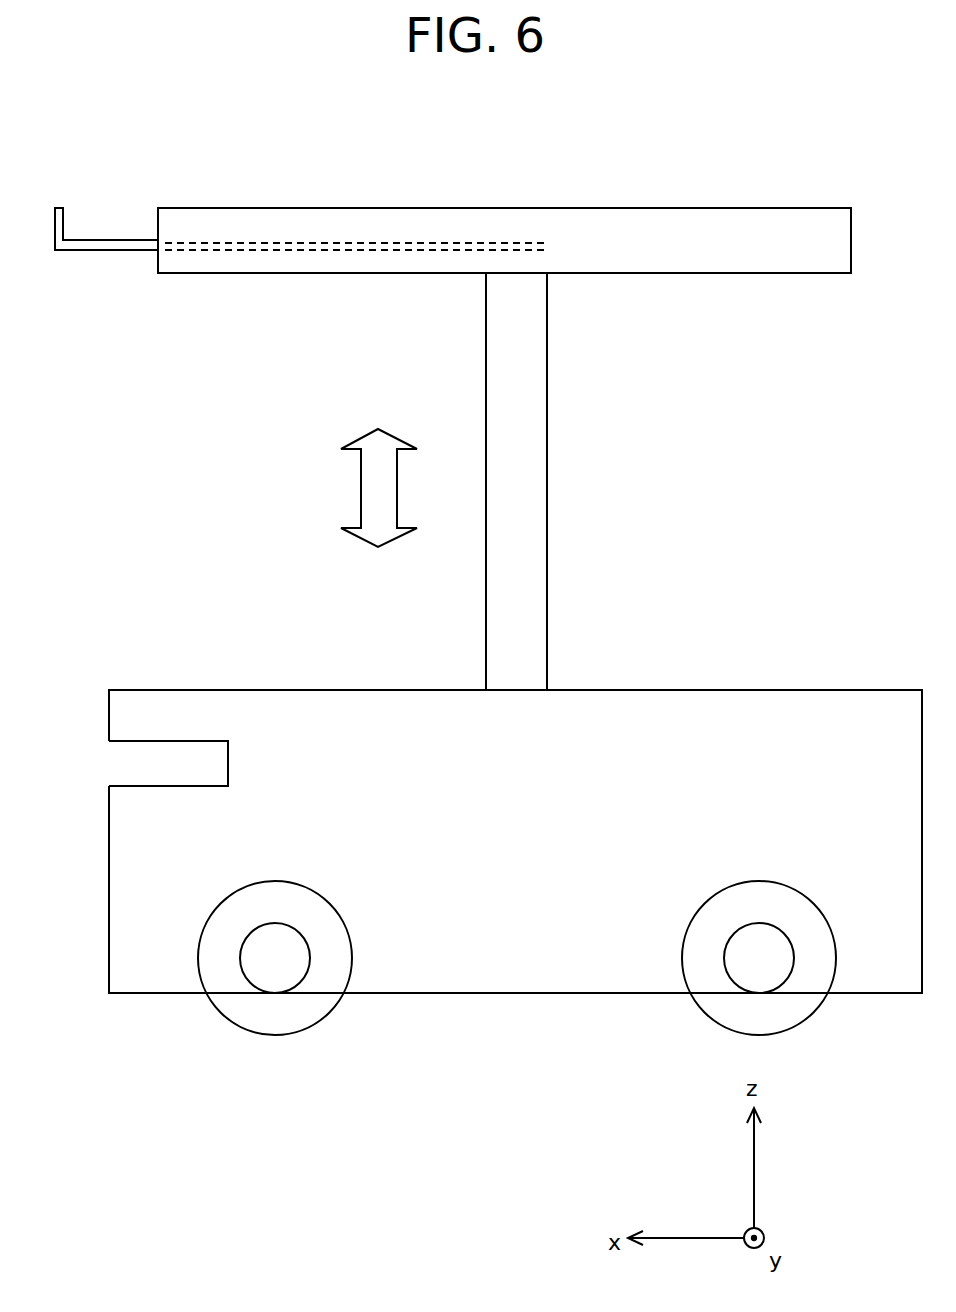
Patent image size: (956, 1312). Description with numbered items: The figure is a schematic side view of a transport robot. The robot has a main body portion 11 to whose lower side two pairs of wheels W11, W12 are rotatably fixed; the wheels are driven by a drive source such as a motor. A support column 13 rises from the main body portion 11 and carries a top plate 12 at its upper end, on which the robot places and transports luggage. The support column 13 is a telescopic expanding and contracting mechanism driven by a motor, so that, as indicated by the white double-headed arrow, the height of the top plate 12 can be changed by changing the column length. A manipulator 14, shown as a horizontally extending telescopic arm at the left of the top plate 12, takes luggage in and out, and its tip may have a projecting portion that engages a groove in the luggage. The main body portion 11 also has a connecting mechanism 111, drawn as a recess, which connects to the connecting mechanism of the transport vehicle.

The main body portion 11 is at (765, 690).
The connecting mechanism 111 is at (118, 762).
The top plate 12 is at (234, 207).
The support column 13 is at (547, 525).
The manipulator 14 is at (115, 252).
The wheel W11 is at (332, 900).
The wheel W12 is at (702, 905).